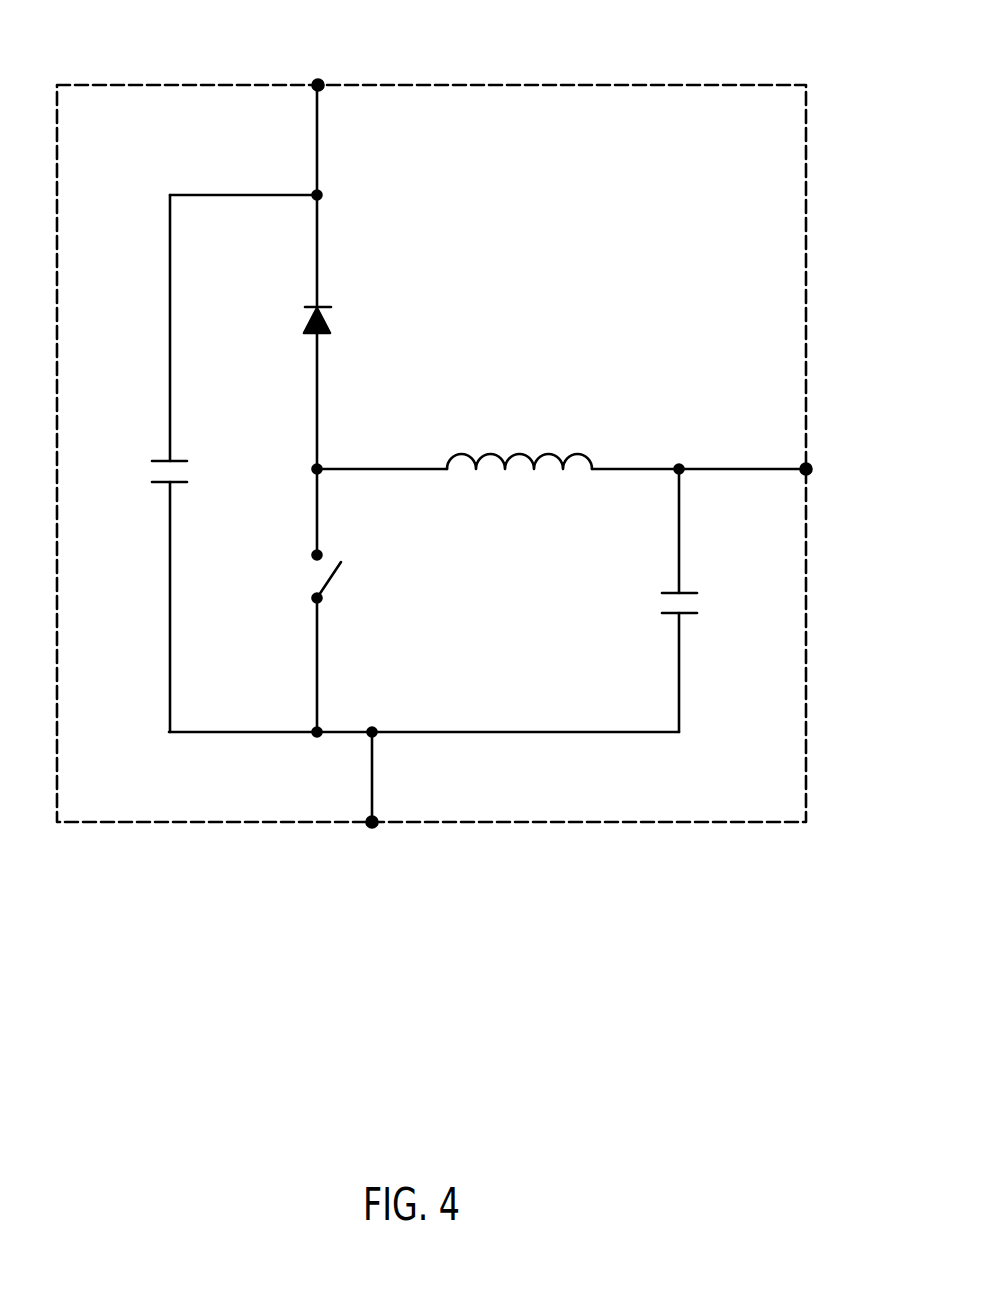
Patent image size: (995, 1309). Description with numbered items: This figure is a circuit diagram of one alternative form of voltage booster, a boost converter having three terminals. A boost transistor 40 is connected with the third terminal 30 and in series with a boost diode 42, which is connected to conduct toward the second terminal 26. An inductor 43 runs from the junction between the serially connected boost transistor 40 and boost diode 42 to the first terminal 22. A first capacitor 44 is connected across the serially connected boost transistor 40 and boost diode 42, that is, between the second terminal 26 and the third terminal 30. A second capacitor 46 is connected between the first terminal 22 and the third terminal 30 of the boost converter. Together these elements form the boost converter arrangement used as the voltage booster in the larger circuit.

The first terminal 22 is at (806, 469).
The second terminal 26 is at (318, 85).
The third terminal 30 is at (372, 827).
The boost transistor 40 is at (343, 578).
The boost diode 42 is at (322, 313).
The inductor 43 is at (513, 452).
The first capacitor 44 is at (157, 472).
The second capacitor 46 is at (660, 603).